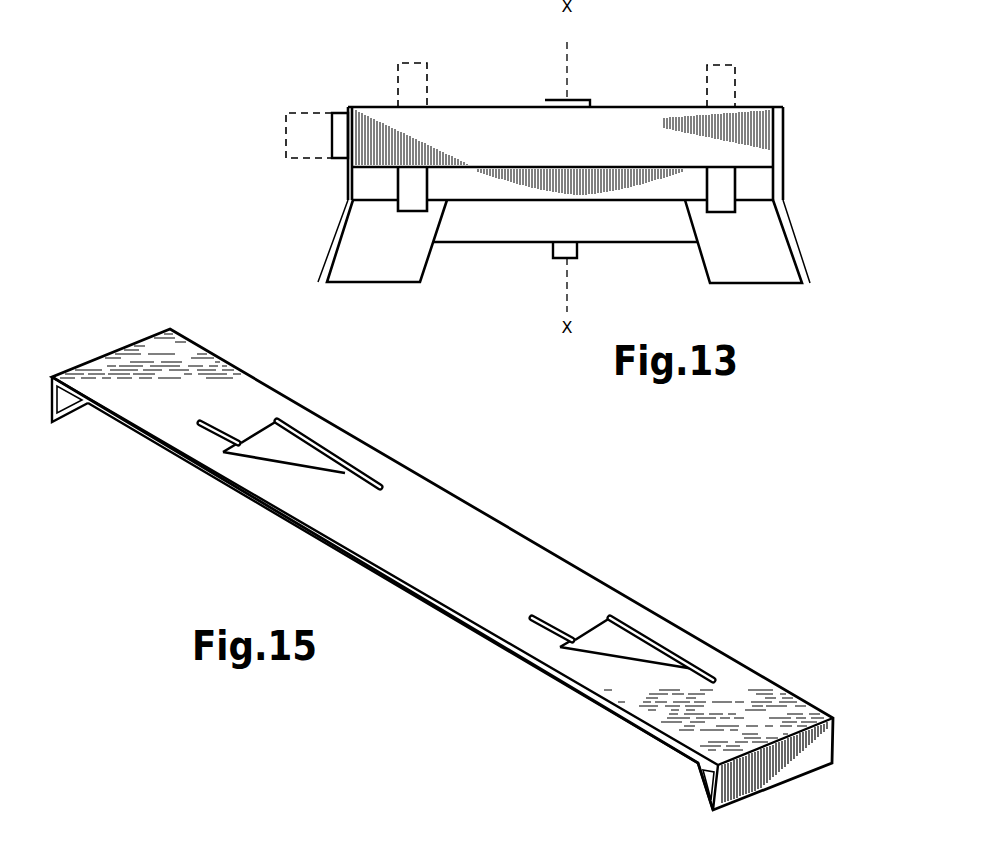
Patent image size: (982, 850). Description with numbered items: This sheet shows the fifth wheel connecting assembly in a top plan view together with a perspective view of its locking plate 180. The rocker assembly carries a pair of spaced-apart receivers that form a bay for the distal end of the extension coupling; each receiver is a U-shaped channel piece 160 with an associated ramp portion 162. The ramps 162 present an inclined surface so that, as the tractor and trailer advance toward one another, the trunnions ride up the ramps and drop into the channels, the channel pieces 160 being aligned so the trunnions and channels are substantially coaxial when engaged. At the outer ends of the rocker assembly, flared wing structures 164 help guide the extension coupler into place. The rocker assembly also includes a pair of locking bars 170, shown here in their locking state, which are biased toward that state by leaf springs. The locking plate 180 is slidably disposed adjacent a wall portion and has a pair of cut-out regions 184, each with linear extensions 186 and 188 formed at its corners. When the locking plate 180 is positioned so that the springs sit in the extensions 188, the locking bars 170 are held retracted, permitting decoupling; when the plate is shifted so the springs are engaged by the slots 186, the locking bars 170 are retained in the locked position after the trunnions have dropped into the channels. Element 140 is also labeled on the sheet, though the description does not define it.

In FIG. 13, the lower plate 140 is at (603, 243).
In FIG. 13, the U-shaped channel piece 160 is at (373, 185).
In FIG. 13, the ramp portion 162 is at (405, 262).
In FIG. 13, the flared wing structure 164 is at (332, 240).
In FIG. 13, the locking bar 170 is at (418, 186).
In FIG. 13, the locking plate 180 is at (337, 113).
In FIG. 15, the locking plate 180 is at (588, 544).
In FIG. 15, the cut-out region 184 is at (645, 650).
In FIG. 15, the linear extension 186 is at (712, 675).
In FIG. 15, the linear extension 188 is at (535, 634).